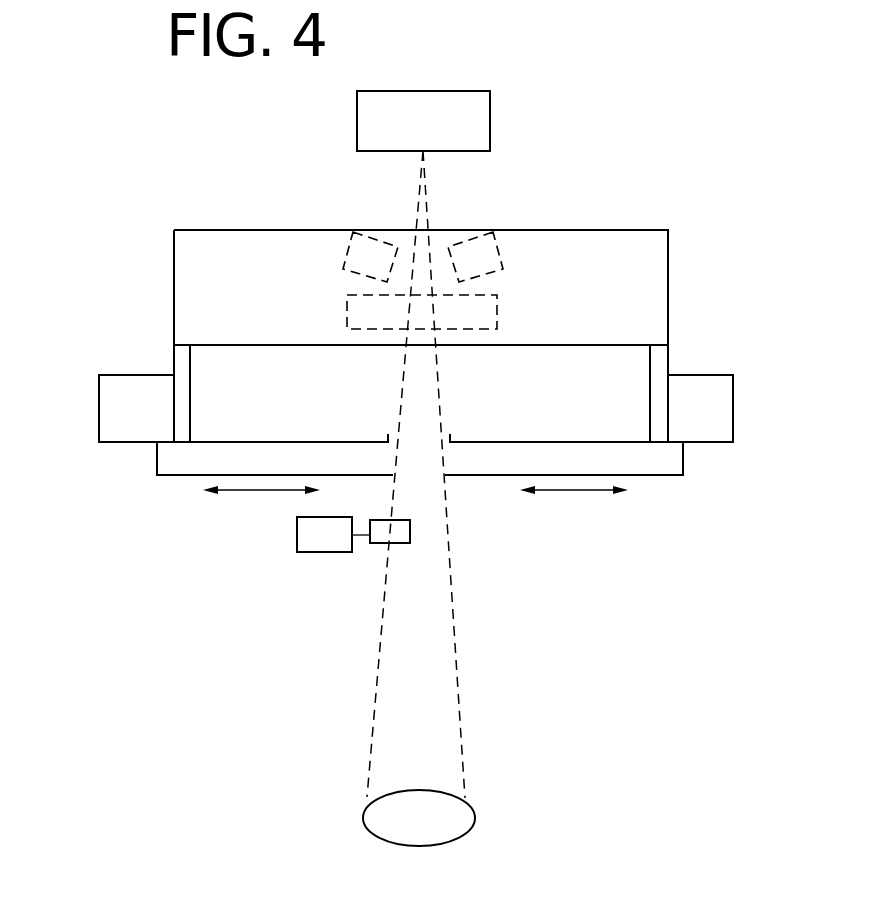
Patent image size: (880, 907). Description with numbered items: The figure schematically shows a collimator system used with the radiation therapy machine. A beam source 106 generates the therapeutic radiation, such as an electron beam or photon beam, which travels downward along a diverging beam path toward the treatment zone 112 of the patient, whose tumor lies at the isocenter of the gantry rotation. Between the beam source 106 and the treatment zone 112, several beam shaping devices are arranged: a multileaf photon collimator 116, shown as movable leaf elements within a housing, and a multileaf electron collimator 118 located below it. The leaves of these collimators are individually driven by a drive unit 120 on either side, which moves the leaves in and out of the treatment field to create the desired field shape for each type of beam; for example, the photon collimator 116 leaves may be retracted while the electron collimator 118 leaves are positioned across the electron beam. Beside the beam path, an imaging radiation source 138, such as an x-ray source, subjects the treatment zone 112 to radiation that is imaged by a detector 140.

The beam source 106 is at (490, 125).
The treatment zone 112 is at (471, 811).
The multileaf photon collimator 116 is at (349, 258).
The multileaf electron collimator 118 is at (172, 462).
The drive unit 120 is at (99, 396).
The imaging radiation source 138 is at (378, 520).
The detector 140 is at (333, 534).